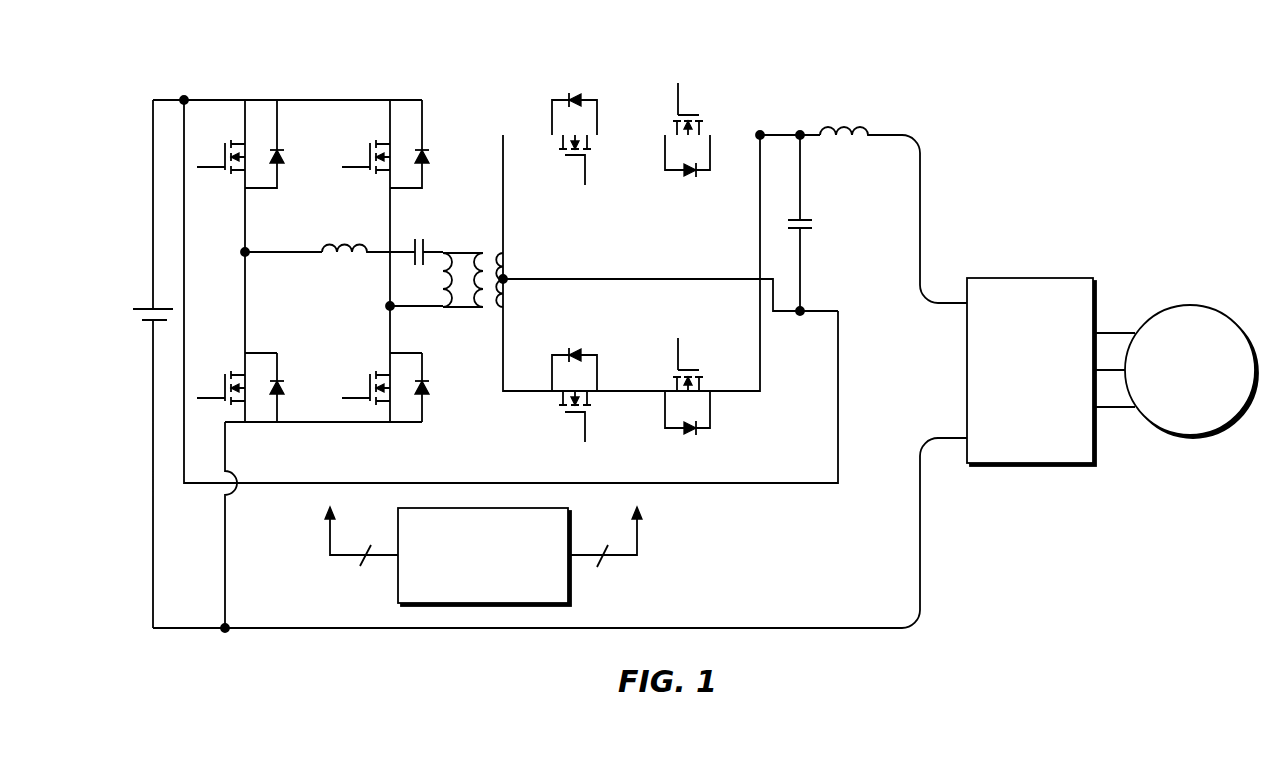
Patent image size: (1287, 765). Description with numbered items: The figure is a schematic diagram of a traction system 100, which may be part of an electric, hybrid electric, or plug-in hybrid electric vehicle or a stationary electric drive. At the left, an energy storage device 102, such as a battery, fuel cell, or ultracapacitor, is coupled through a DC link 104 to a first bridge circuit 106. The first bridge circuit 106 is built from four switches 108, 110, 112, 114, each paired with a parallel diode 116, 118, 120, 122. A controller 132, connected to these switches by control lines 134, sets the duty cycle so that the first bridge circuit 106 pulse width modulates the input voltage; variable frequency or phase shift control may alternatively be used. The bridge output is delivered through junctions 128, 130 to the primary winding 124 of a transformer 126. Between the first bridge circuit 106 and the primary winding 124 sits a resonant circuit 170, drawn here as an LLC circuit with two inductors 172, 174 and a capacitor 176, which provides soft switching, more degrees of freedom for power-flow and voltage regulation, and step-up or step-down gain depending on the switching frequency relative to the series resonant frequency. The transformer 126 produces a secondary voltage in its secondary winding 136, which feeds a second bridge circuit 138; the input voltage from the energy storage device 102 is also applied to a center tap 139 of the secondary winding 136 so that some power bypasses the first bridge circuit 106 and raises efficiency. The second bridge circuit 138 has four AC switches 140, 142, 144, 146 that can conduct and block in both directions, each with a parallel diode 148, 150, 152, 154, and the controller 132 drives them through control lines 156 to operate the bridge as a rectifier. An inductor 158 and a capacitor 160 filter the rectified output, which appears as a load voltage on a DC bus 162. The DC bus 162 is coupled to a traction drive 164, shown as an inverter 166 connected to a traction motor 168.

The traction system 100 is at (1040, 115).
The energy storage device 102 is at (125, 322).
The DC link 104 is at (184, 98).
The first bridge circuit 106 is at (340, 74).
The switch 108 is at (240, 132).
The switch 110 is at (240, 366).
The switch 112 is at (383, 132).
The switch 114 is at (383, 366).
The diode 116 is at (328, 187).
The diode 118 is at (331, 396).
The diode 120 is at (480, 164).
The diode 122 is at (480, 396).
The primary winding 124 is at (482, 290).
The transformer 126 is at (499, 245).
The junction 128 is at (293, 281).
The junction 130 is at (390, 307).
The controller 132 is at (505, 584).
The control lines 134 is at (387, 594).
The secondary winding 136 is at (555, 305).
The second bridge circuit 138 is at (653, 38).
The center tap 139 is at (505, 277).
The switch 140 is at (598, 216).
The switch 142 is at (598, 471).
The switch 144 is at (711, 74).
The switch 146 is at (711, 332).
The diode 148 is at (598, 74).
The diode 150 is at (598, 334).
The diode 152 is at (711, 216).
The diode 154 is at (711, 465).
The control lines 156 is at (625, 594).
The inductor 158 is at (866, 116).
The capacitor 160 is at (867, 236).
The DC bus 162 is at (914, 399).
The traction drive 164 is at (1252, 262).
The inverter 166 is at (1052, 432).
The traction motor 168 is at (1212, 404).
The resonant circuit 170 is at (390, 277).
The inductor 172 is at (368, 242).
The inductor 174 is at (443, 288).
The capacitor 176 is at (443, 233).